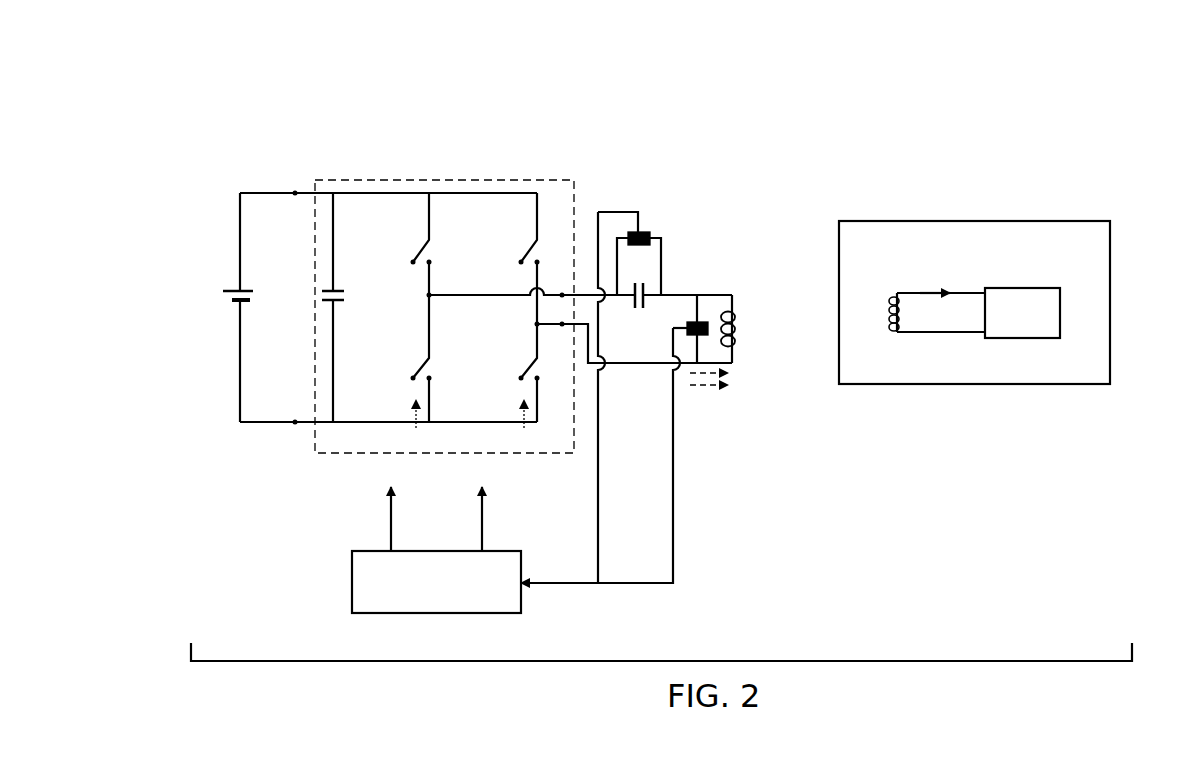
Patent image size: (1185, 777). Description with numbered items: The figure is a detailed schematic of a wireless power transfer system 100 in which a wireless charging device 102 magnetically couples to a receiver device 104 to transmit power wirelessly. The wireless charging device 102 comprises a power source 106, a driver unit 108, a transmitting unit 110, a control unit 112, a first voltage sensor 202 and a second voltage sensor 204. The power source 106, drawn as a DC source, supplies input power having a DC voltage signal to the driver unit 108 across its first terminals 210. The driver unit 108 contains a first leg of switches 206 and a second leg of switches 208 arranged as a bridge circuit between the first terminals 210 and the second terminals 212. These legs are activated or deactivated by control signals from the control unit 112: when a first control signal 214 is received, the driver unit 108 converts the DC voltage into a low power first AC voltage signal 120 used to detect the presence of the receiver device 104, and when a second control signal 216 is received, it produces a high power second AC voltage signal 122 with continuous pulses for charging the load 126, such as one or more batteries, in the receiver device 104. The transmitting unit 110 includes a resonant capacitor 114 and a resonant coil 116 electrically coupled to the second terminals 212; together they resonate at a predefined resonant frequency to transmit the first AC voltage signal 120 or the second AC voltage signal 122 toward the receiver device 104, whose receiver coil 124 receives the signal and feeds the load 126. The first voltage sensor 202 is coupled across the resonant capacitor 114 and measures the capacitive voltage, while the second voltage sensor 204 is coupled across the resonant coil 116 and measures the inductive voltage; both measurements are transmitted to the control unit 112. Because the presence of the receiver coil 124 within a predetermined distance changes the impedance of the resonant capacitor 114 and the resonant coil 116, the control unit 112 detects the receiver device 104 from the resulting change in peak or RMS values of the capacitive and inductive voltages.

The wireless power transfer system 100 is at (1074, 69).
The wireless charging device 102 is at (254, 176).
The receiver device 104 is at (975, 221).
The power source 106 is at (224, 288).
The driver unit 108 is at (444, 180).
The transmitting unit 110 is at (661, 186).
The control unit 112 is at (352, 582).
The resonant capacitor 114 is at (646, 292).
The resonant coil 116 is at (740, 315).
The first AC voltage signal 120 is at (735, 374).
The second AC voltage signal 122 is at (735, 387).
The receiver coil 124 is at (888, 318).
The load 126 is at (1022, 338).
The first voltage sensor 202 is at (651, 236).
The second voltage sensor 204 is at (706, 322).
The first leg of switches 206 is at (420, 424).
The second leg of switches 208 is at (528, 424).
The first terminals 210 is at (295, 422).
The second terminals 212 is at (560, 323).
The first control signal 214 is at (391, 525).
The second control signal 216 is at (482, 525).